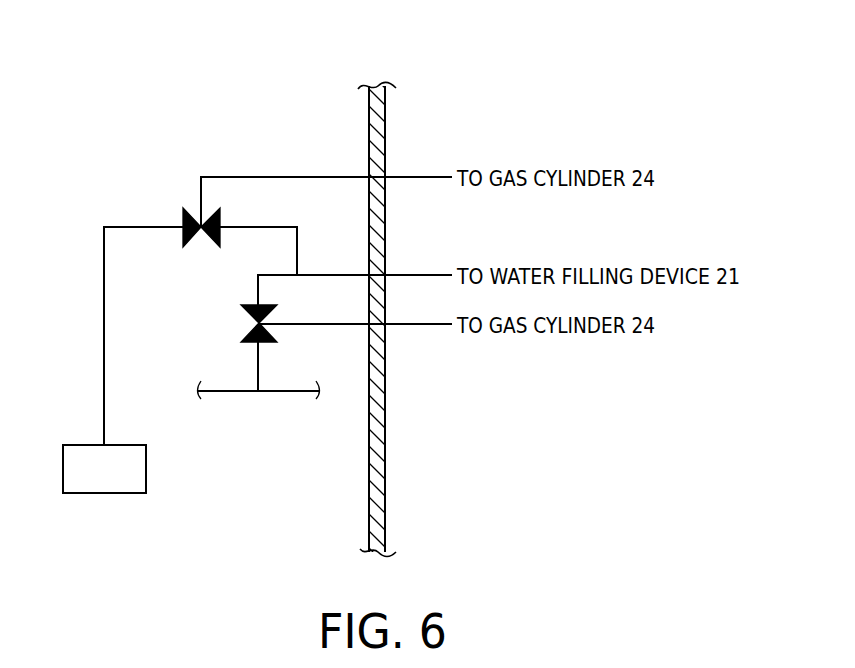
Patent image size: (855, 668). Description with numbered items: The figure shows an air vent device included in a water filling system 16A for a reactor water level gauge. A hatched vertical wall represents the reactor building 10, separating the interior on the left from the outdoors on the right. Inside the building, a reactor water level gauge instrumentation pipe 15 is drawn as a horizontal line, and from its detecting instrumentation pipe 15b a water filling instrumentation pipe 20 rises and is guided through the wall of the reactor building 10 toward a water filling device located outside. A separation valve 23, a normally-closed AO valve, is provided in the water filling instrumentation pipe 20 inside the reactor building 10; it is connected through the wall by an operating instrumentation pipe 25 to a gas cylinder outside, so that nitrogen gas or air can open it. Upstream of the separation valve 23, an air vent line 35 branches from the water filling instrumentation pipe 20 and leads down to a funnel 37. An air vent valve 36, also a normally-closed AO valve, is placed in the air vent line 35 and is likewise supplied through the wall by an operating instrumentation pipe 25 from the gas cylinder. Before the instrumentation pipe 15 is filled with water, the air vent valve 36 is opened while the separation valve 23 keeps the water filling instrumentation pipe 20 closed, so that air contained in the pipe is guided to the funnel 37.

The reactor building 10 is at (386, 127).
The water filling system 16A is at (504, 108).
The operating instrumentation pipe 25 is at (314, 177).
The air vent valve 36 is at (184, 219).
The air vent line 35 is at (103, 290).
The funnel 37 is at (118, 445).
The water filling instrumentation pipe 20 is at (258, 282).
The separation valve 23 is at (243, 311).
The reactor water level gauge instrumentation pipe 15 is at (228, 392).
The detecting instrumentation pipe 15b is at (289, 393).